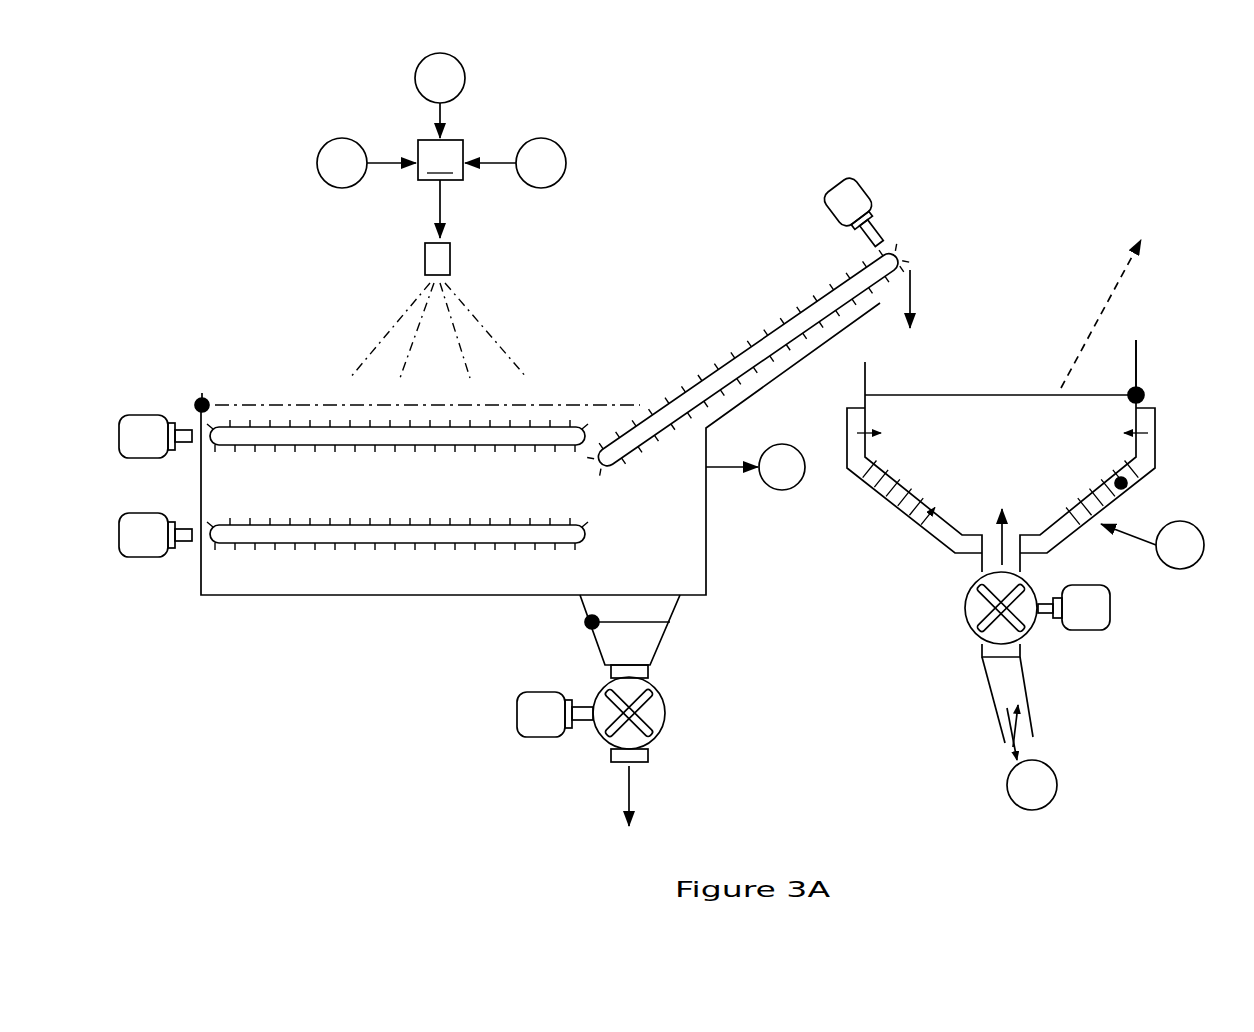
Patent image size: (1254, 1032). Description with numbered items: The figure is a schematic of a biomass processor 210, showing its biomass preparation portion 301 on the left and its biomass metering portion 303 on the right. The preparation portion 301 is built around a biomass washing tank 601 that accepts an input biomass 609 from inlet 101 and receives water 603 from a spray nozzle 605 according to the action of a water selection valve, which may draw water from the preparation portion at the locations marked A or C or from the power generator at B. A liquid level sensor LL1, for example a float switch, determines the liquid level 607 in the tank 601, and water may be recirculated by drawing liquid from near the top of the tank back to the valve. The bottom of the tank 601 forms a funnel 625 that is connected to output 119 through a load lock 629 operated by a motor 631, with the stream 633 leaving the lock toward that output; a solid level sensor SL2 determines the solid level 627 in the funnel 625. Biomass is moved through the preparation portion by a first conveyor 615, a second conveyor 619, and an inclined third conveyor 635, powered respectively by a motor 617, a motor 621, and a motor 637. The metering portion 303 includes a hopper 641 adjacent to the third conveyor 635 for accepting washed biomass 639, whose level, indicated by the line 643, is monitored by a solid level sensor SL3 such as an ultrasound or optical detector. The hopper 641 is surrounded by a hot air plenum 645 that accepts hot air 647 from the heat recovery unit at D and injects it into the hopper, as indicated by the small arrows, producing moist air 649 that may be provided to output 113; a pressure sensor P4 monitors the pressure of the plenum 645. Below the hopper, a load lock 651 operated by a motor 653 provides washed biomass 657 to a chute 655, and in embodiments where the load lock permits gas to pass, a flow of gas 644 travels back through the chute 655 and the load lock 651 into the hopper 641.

The biomass processor 210 is at (278, 110).
The biomass preparation portion 301 is at (277, 247).
The biomass metering portion 303 is at (1068, 179).
The inlet 101 is at (240, 390).
The input biomass 609 is at (193, 332).
The water 603 is at (416, 209).
The spray nozzle 605 is at (450, 258).
The liquid level 607 is at (555, 400).
The first conveyor 615 is at (360, 449).
The motor 617 is at (170, 458).
The second conveyor 619 is at (362, 546).
The motor 621 is at (170, 556).
The biomass washing tank 601 is at (707, 485).
The funnel 625 is at (680, 610).
The solid level 627 is at (643, 625).
The load lock 629 is at (667, 727).
The motor 631 is at (535, 738).
The outlet 633 is at (598, 796).
The output 119 is at (631, 845).
The third conveyor 635 is at (772, 330).
The motor 637 is at (880, 197).
The washed biomass 639 is at (901, 320).
The hopper 641 is at (1138, 371).
The liquid surface 643 is at (982, 391).
The flow of gas 644 is at (1003, 524).
The hot air plenum 645 is at (1158, 431).
The hot air 647 is at (1152, 545).
The moist air 649 is at (1101, 314).
The load lock 651 is at (966, 632).
The motor 653 is at (1111, 602).
The chute 655 is at (992, 692).
The washed biomass 657 is at (1013, 748).
The output 113 is at (1159, 213).
The liquid level sensor LL1 is at (196, 404).
The solid level sensor SL2 is at (585, 622).
The solid level sensor SL3 is at (1142, 394).
The pressure sensor P4 is at (1126, 485).